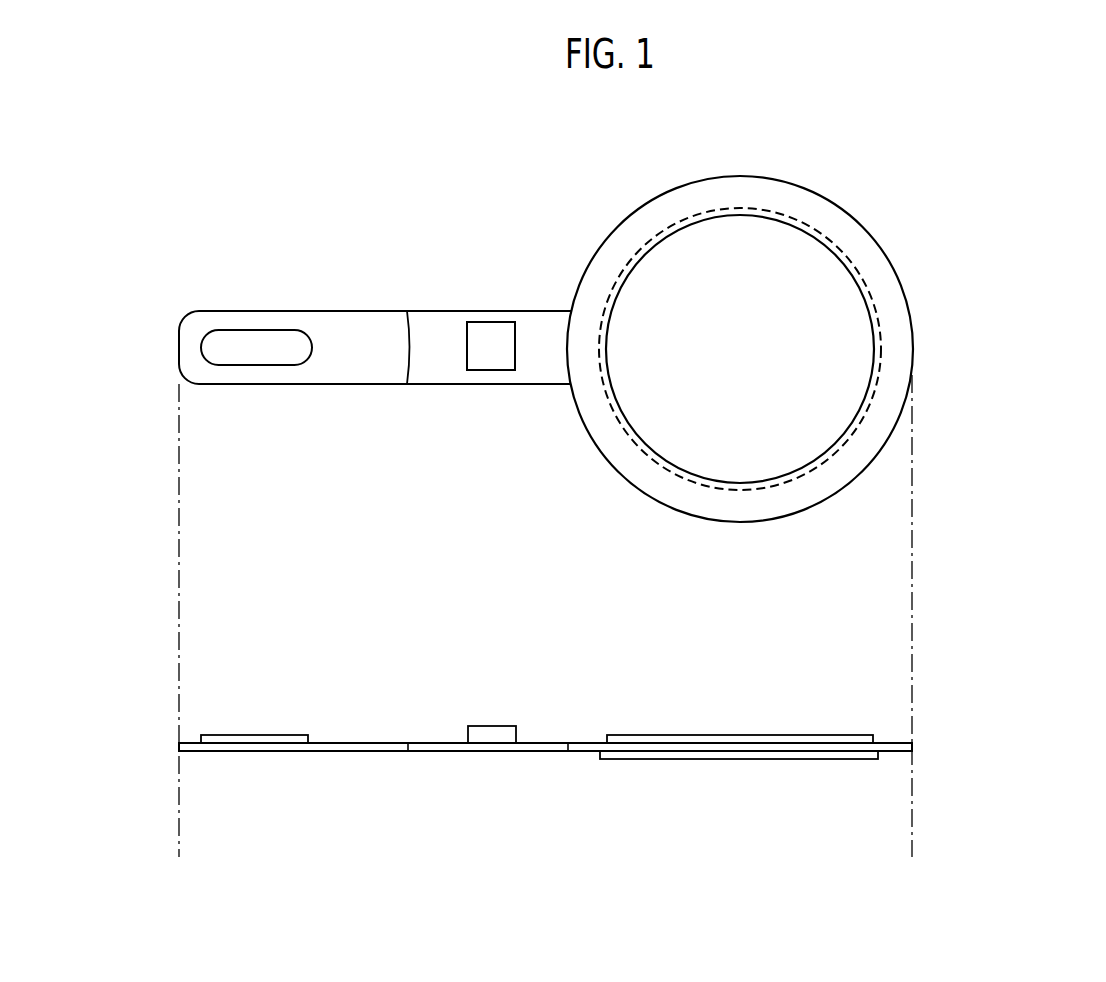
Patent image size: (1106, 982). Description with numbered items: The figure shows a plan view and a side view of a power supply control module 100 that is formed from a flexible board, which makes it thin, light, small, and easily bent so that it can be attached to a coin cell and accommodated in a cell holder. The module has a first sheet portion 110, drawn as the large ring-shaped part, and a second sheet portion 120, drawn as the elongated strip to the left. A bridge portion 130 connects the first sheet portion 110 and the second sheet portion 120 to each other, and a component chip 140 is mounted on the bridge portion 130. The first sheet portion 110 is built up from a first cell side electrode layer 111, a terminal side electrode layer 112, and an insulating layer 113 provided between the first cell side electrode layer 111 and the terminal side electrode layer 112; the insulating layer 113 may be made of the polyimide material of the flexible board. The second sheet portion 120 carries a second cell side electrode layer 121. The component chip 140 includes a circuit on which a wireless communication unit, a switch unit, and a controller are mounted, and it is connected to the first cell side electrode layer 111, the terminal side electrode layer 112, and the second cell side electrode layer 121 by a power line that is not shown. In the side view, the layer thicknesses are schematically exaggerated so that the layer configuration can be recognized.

The power supply control module 100 is at (177, 189).
The first sheet portion 110 is at (1012, 232).
The first cell side electrode layer 111 is at (843, 288).
The terminal side electrode layer 112 is at (809, 326).
The insulating layer 113 is at (892, 306).
The second sheet portion 120 is at (293, 384).
The second cell side electrode layer 121 is at (250, 342).
The bridge portion 130 is at (453, 384).
The component chip 140 is at (490, 360).